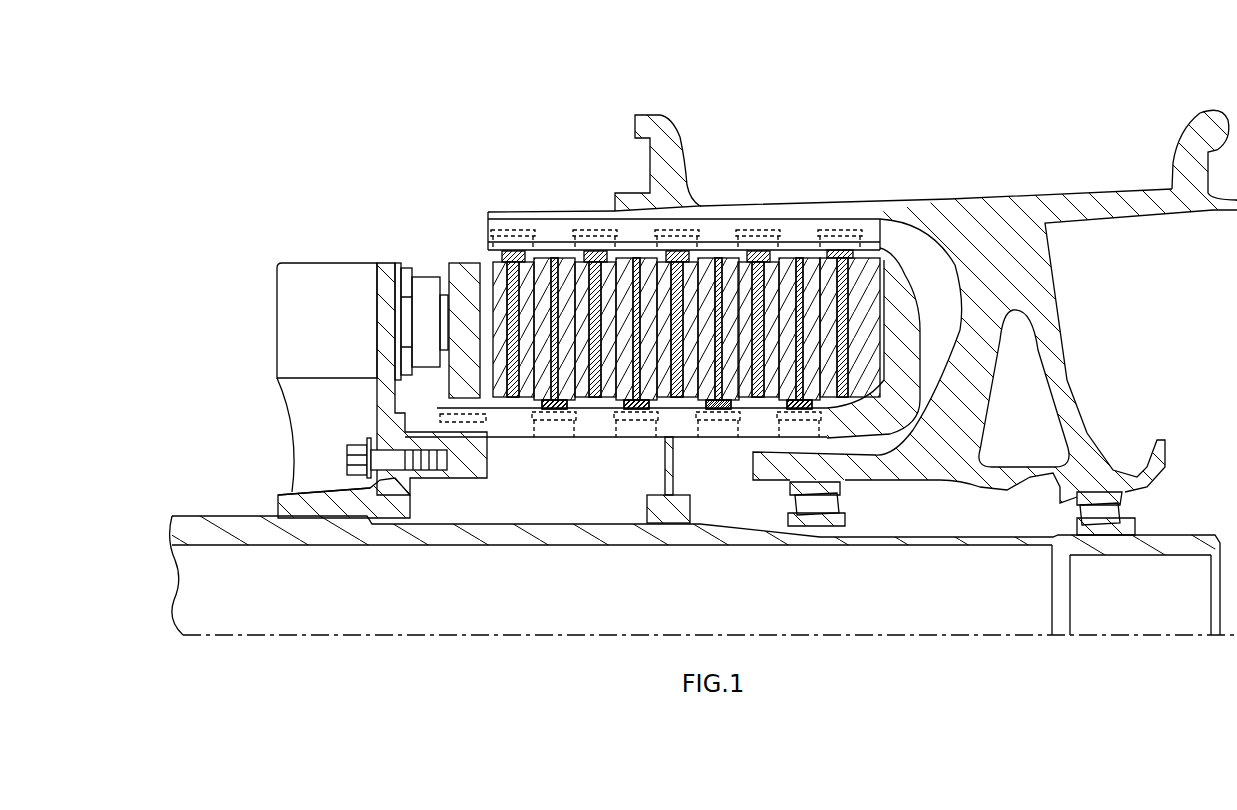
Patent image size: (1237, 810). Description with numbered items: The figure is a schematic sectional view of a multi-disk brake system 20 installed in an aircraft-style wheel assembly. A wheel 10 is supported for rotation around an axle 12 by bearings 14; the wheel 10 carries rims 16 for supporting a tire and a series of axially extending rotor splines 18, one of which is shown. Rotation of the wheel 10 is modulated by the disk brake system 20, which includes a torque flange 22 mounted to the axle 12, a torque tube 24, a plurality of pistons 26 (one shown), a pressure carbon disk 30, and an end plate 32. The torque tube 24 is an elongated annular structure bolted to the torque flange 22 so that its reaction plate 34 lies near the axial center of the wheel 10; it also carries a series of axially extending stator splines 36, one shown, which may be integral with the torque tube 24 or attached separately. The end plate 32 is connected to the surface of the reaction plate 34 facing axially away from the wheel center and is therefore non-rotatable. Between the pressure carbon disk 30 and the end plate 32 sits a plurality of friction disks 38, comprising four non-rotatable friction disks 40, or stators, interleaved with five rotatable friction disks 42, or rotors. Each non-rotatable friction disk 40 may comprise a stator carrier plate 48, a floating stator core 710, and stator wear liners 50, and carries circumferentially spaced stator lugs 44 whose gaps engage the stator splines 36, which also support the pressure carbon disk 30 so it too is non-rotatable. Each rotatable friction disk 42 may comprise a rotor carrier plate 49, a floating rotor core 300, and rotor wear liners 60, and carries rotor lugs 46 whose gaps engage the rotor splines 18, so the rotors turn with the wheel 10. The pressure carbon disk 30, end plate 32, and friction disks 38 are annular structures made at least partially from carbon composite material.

The wheel 10 is at (1056, 172).
The axle 12 is at (965, 530).
The bearings 14 is at (830, 510).
The rims 16 is at (672, 118).
The rotor splines 18 is at (632, 216).
The multi-disk brake system 20 is at (404, 218).
The torque flange 22 is at (383, 425).
The torque tube 24 is at (549, 400).
The pistons 26 is at (425, 283).
The pressure carbon disk 30 is at (462, 270).
The end plate 32 is at (885, 242).
The reaction plate 34 is at (893, 373).
The stator splines 36 is at (598, 440).
The friction disks 38 is at (487, 255).
The non-rotatable friction disk 40 is at (813, 270).
The rotatable friction disk 42 is at (508, 258).
The stator lugs 44 is at (775, 418).
The rotor lugs 46 is at (742, 232).
The stator carrier plate 48 is at (803, 343).
The rotor carrier plate 49 is at (843, 293).
The stator wear liners 50 is at (810, 258).
The rotor wear liners 60 is at (514, 400).
The floating rotor core 300 is at (845, 357).
The floating stator core 710 is at (770, 258).